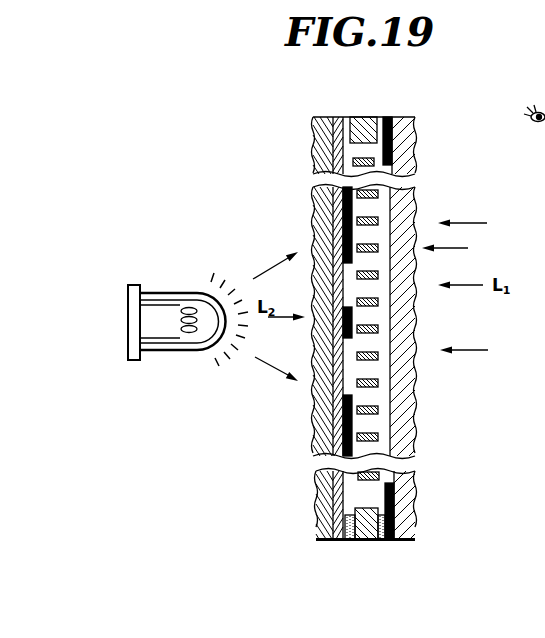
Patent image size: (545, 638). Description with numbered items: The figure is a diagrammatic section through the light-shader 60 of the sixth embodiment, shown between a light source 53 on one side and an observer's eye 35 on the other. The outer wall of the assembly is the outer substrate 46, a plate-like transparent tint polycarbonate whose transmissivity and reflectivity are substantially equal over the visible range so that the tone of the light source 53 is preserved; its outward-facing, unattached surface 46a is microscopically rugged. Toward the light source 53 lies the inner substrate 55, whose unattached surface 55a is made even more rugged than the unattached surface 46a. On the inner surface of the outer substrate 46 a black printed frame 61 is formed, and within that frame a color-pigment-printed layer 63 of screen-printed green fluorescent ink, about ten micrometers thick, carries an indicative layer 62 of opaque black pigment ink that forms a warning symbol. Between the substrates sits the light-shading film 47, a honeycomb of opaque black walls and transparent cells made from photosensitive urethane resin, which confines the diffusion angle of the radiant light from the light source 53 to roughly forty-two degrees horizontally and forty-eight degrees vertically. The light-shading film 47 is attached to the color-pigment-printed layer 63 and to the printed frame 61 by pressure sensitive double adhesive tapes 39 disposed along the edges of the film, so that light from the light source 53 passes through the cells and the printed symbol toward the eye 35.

The observer's eye 35 is at (534, 110).
The light source 53 is at (178, 293).
The light-shader 60 is at (464, 249).
The outer substrate 46 is at (405, 388).
The unattached surface 46a is at (415, 312).
The inner substrate 55 is at (327, 520).
The unattached surface 55a is at (320, 405).
The indicative layer 62 is at (357, 422).
The color-pigment-printed layer 63 is at (322, 477).
The light-shading film 47 is at (397, 505).
The black printed frame 61 is at (413, 523).
The pressure sensitive double adhesive tapes 39 is at (384, 542).